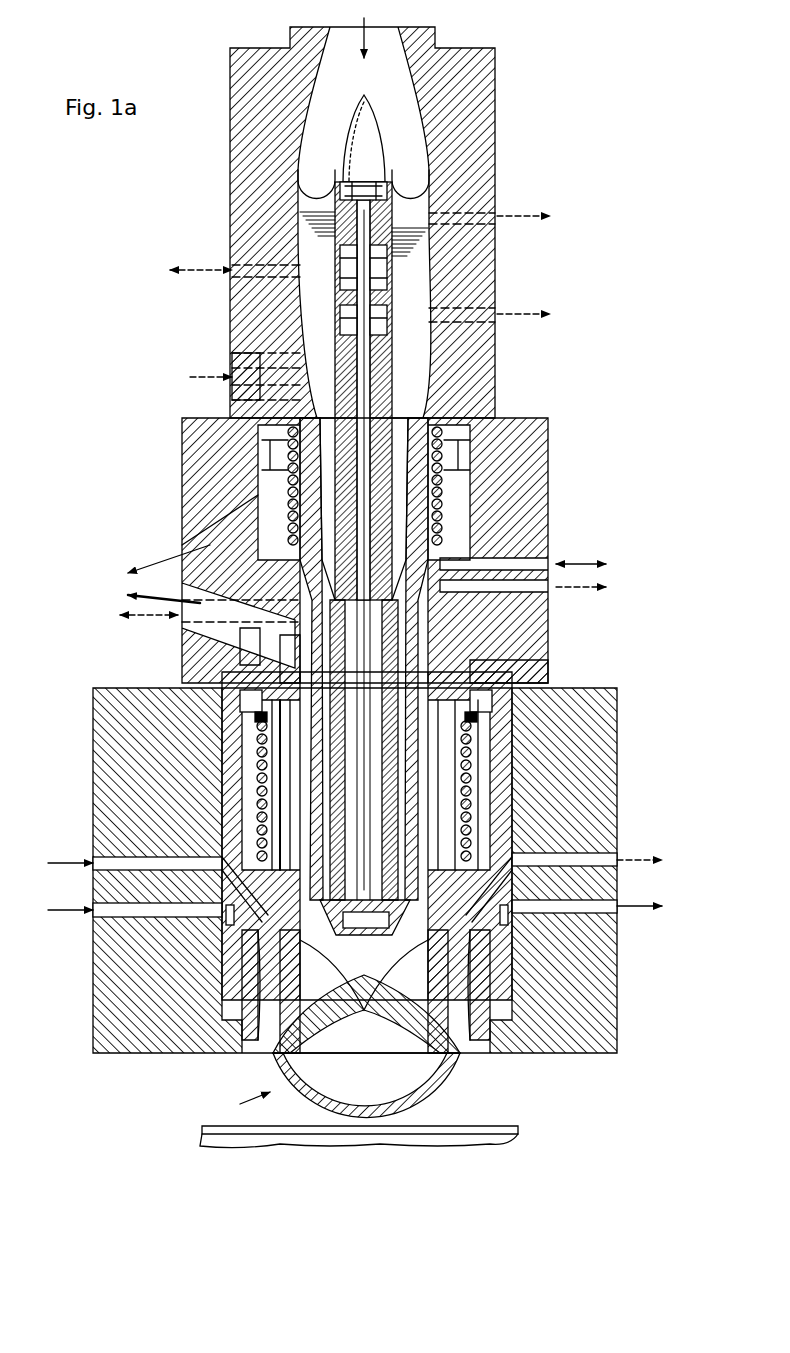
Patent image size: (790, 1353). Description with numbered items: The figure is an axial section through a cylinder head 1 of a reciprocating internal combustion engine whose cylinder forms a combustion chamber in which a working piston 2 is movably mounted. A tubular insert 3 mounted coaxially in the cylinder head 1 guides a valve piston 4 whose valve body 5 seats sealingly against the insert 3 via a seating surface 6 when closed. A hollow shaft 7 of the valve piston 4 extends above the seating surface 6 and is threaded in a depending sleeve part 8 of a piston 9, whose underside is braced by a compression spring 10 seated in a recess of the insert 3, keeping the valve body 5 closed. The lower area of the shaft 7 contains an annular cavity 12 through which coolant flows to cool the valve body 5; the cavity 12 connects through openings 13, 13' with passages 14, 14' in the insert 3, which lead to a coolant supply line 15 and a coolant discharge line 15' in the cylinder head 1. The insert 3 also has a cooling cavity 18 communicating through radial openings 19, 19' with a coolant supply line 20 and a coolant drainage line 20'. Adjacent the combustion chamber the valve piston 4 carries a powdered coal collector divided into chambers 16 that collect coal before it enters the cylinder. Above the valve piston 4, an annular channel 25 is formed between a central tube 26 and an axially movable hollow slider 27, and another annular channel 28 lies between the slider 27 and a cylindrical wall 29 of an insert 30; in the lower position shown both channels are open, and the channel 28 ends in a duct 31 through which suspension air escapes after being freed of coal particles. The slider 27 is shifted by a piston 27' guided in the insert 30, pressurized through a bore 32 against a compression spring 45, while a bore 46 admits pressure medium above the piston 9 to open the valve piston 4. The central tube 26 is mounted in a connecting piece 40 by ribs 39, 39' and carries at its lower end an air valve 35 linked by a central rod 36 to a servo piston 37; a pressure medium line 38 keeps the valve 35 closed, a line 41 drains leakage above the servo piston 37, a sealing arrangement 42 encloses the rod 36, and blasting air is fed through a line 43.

The cylinder head 1 is at (578, 1052).
The working piston 2 is at (212, 1128).
The tubular insert 3 is at (546, 669).
The valve piston 4 is at (249, 1102).
The valve body 5 is at (449, 1080).
The seating surface 6 is at (442, 1056).
The hollow shaft 7 is at (280, 998).
The sleeve part 8 is at (472, 773).
The piston 9 is at (482, 711).
The compression spring 10 is at (479, 740).
The annular cavity 12 is at (414, 984).
The opening 13 is at (297, 991).
The opening 13' is at (487, 991).
The passage 14 is at (220, 889).
The passage 14' is at (510, 889).
The coolant supply line 15 is at (135, 877).
The coolant discharge line 15' is at (587, 849).
The chambers 16 is at (386, 985).
The cooling cavity 18 is at (490, 990).
The radial opening 19 is at (206, 929).
The radial opening 19' is at (527, 928).
The coolant supply line 20 is at (135, 927).
The coolant drainage line 20' is at (587, 919).
The annular channel 25 is at (397, 113).
The central tube 26 is at (420, 672).
The hollow slider 27 is at (232, 785).
The piston 27' is at (474, 486).
The annular channel 28 is at (262, 759).
The cylindrical wall 29 is at (283, 790).
The insert 30 is at (540, 458).
The duct 31 is at (192, 606).
The bore 32 is at (549, 568).
The air valve 35 is at (356, 898).
The central rod 36 is at (372, 382).
The servo piston 37 is at (385, 272).
The pressure medium line 38 is at (232, 273).
The rib 39 is at (316, 178).
The rib 39' is at (410, 178).
The connecting piece 40 is at (478, 154).
The line 41 is at (486, 214).
The sealing arrangement 42 is at (340, 334).
The line 43 is at (232, 372).
The compression spring 45 is at (442, 436).
The bore 46 is at (182, 626).